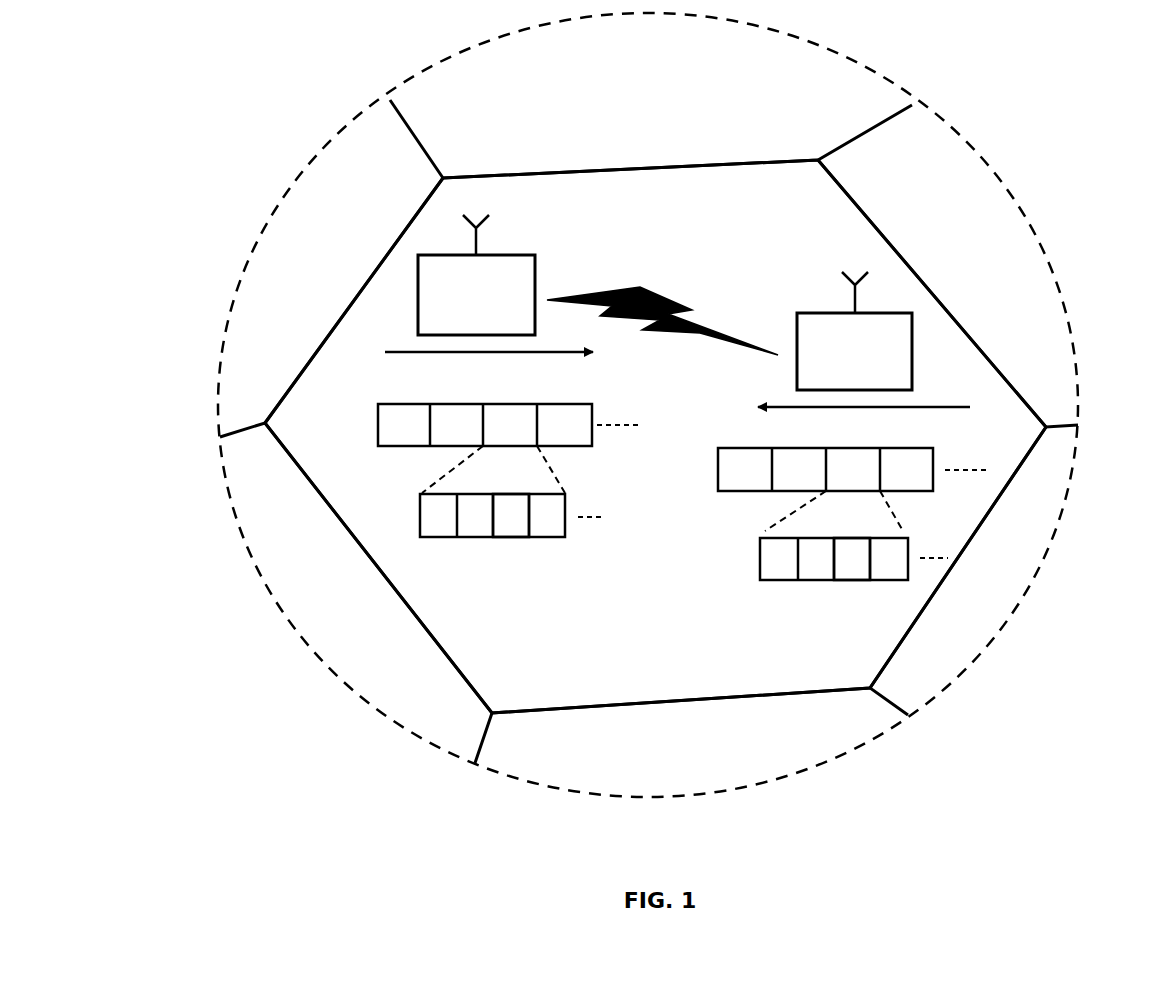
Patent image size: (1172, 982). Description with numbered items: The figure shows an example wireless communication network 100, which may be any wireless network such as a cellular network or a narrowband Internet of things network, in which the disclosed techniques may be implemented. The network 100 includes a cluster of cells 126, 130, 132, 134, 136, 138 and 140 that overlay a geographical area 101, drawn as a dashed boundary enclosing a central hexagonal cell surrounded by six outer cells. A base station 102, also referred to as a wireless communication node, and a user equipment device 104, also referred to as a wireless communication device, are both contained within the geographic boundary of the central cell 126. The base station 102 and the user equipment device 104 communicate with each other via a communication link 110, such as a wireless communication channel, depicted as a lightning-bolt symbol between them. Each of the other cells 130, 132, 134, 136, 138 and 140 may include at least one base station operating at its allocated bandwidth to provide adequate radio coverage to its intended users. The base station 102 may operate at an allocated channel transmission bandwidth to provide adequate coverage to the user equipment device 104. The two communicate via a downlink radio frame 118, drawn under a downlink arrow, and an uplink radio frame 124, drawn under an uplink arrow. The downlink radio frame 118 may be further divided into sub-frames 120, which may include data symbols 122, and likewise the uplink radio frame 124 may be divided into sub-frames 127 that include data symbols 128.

The wireless communication network 100 is at (1100, 142).
The geographical area 101 is at (242, 276).
The base station 102 is at (458, 324).
The user equipment device 104 is at (837, 381).
The communication link 110 is at (653, 292).
The downlink radio frame 118 is at (381, 430).
The sub-frame 120 is at (420, 522).
The data symbol 122 is at (513, 535).
The uplink radio frame 124 is at (727, 470).
The cell 126 is at (656, 671).
The sub-frame 127 is at (762, 567).
The data symbol 128 is at (855, 583).
The cell 130 is at (291, 274).
The cell 132 is at (633, 112).
The cell 134 is at (951, 267).
The cell 136 is at (969, 602).
The cell 138 is at (671, 756).
The cell 140 is at (313, 611).